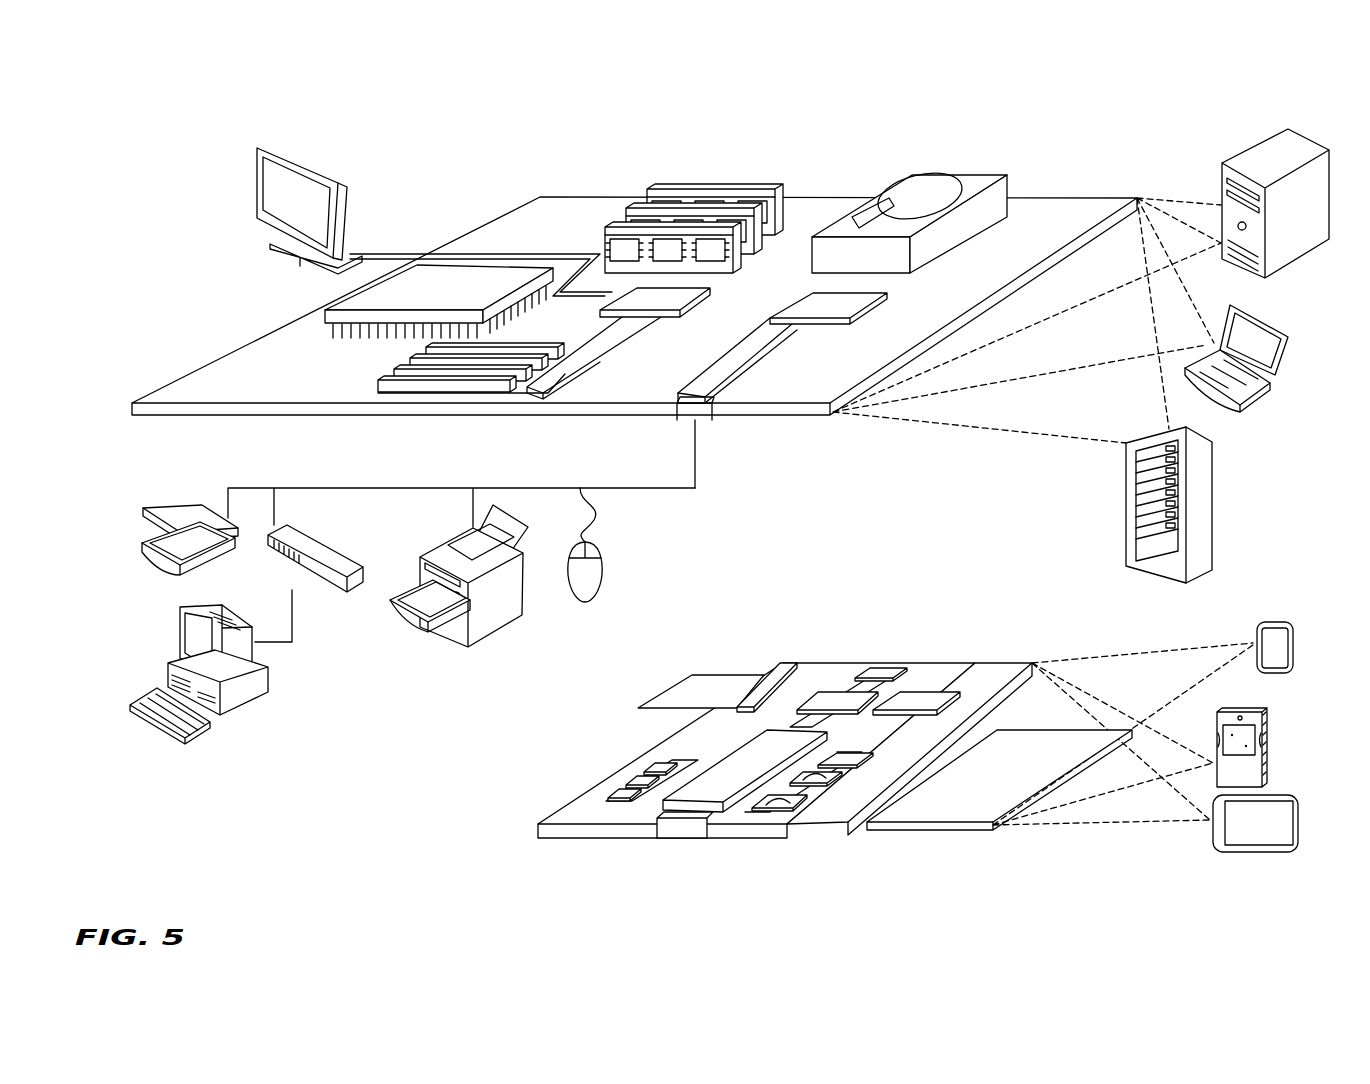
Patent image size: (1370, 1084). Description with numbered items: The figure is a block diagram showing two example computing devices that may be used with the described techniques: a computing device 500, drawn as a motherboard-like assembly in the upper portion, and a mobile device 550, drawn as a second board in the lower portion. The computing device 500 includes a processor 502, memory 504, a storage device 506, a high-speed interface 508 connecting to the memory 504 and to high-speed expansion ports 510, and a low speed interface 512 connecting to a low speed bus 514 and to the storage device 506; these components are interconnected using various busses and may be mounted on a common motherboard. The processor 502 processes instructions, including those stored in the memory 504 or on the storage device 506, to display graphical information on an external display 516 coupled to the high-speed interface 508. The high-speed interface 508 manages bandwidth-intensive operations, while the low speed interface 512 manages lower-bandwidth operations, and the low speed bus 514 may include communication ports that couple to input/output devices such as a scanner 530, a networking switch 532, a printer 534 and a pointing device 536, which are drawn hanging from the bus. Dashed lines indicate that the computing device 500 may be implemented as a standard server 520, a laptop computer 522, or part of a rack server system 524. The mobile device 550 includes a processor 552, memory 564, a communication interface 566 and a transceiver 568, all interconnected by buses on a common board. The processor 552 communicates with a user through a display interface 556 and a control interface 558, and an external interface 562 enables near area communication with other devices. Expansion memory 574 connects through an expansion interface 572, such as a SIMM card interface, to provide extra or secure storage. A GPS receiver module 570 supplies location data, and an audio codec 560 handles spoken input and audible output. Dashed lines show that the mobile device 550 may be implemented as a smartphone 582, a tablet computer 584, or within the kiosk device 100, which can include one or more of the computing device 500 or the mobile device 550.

The computing device 500 is at (218, 82).
The processor 502 is at (328, 312).
The memory 504 is at (677, 188).
The storage device 506 is at (957, 177).
The high-speed interface 508 is at (643, 300).
The high-speed expansion ports 510 is at (412, 374).
The low speed interface 512 is at (811, 304).
The low speed bus 514 is at (703, 412).
The display 516 is at (259, 149).
The standard server 520 is at (1222, 178).
The laptop computer 522 is at (1268, 317).
The rack server system 524 is at (1126, 500).
The scanner 530 is at (178, 504).
The network hub 532 is at (330, 590).
The printer 534 is at (497, 632).
The mouse 536 is at (604, 585).
The mobile device 550 is at (510, 871).
The processor 552 is at (742, 760).
The display interface 556 is at (800, 806).
The control interface 558 is at (814, 790).
The audio codec 560 is at (838, 760).
The external interface 562 is at (683, 840).
The memory 564 is at (1050, 792).
The communication interface 566 is at (848, 697).
The transceiver 568 is at (923, 690).
The GPS receiver module 570 is at (880, 668).
The expansion interface 572 is at (768, 670).
The expansion memory 574 is at (690, 672).
The smartphone 582 is at (1276, 621).
The kiosk device 100 is at (1268, 716).
The tablet computer 584 is at (1299, 823).